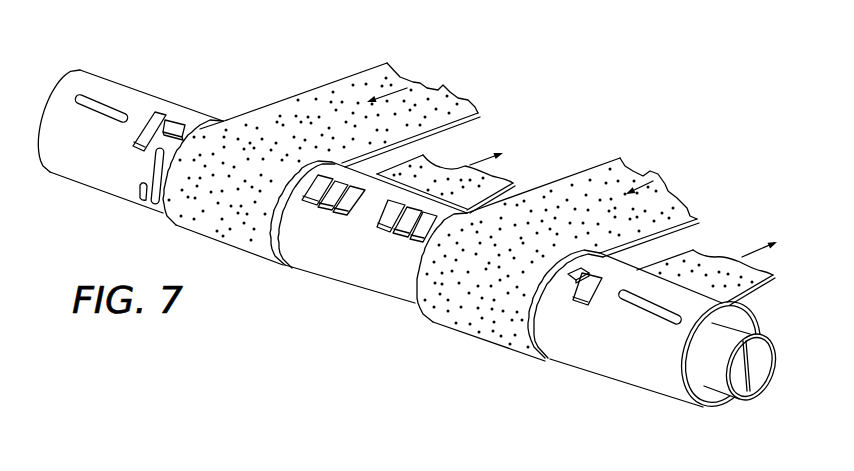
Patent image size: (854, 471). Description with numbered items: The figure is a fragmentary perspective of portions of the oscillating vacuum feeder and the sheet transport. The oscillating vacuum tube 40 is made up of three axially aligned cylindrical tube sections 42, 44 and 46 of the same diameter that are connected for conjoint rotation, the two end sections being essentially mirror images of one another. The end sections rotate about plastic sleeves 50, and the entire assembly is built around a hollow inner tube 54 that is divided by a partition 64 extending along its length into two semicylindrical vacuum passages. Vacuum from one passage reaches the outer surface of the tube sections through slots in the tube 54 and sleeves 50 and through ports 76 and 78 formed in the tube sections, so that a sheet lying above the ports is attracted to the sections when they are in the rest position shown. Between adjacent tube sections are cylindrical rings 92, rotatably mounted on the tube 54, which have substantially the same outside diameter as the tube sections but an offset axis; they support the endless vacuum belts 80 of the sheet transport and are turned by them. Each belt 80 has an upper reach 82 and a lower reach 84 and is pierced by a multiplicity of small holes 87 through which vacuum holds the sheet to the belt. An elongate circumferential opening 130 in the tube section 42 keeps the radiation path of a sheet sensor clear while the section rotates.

The oscillating vacuum tube 40 is at (80, 193).
The tube section 42 is at (128, 93).
The tube section 44 is at (396, 288).
The tube section 46 is at (638, 375).
The plastic sleeve 50 is at (735, 320).
The tube 54 is at (760, 372).
The partition 64 is at (746, 394).
The port 76 is at (133, 147).
The port 78 is at (378, 229).
The endless vacuum belt 80 is at (606, 157).
The upper reach 82 is at (445, 88).
The lower reach 84 is at (452, 168).
The holes 87 is at (328, 97).
The ring 92 is at (285, 264).
The opening 130 is at (144, 197).